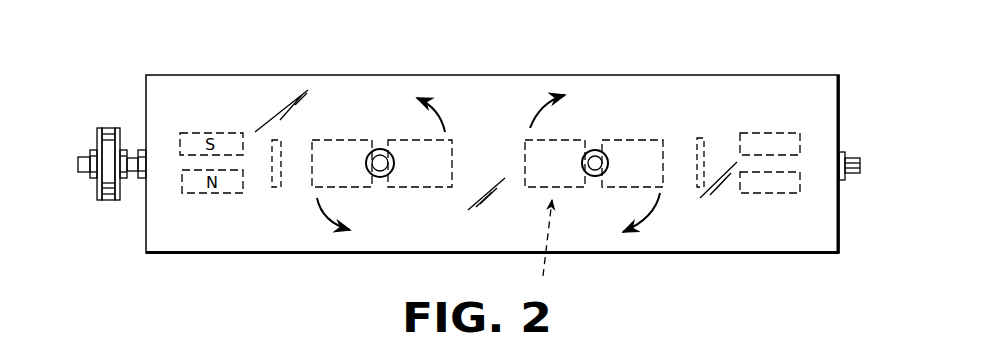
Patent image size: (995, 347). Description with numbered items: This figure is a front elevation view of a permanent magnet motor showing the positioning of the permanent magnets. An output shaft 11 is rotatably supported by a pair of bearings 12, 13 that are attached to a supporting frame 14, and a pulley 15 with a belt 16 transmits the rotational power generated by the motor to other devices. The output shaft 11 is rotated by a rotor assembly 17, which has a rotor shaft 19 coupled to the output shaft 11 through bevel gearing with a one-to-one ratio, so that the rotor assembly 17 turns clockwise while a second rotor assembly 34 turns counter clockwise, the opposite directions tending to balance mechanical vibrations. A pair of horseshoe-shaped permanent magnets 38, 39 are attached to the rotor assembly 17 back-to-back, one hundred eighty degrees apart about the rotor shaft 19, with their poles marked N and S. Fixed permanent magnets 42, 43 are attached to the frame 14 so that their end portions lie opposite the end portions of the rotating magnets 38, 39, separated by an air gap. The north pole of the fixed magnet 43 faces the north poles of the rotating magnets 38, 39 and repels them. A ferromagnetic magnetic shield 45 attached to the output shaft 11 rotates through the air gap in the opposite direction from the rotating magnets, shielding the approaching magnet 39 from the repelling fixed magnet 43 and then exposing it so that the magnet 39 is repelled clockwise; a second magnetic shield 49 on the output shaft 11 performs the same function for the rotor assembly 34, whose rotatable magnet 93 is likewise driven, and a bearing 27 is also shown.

The output shaft 11 is at (82, 174).
The bearing 12 is at (142, 179).
The bearing 13 is at (845, 153).
The supporting frame 14 is at (150, 238).
The pulley 15 is at (98, 143).
The belt 16 is at (107, 137).
The rotor assembly 17 is at (545, 250).
The rotor shaft 19 is at (598, 172).
The bearing 27 is at (588, 152).
The rotor assembly 34 is at (387, 136).
The permanent magnet 38 is at (543, 180).
The permanent magnet 39 is at (582, 165).
The fixed permanent magnet 42 is at (788, 142).
The fixed permanent magnet 43 is at (778, 192).
The magnetic shield 45 is at (697, 133).
The magnetic shield 49 is at (277, 200).
The rotatable magnet 93 is at (424, 180).